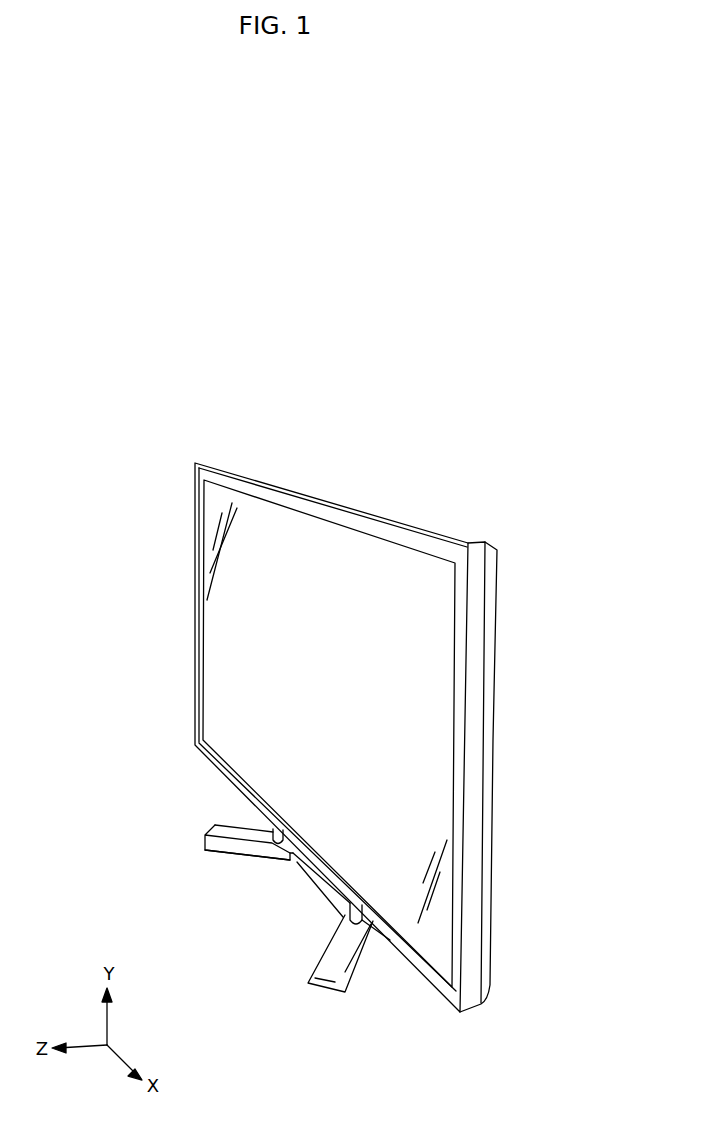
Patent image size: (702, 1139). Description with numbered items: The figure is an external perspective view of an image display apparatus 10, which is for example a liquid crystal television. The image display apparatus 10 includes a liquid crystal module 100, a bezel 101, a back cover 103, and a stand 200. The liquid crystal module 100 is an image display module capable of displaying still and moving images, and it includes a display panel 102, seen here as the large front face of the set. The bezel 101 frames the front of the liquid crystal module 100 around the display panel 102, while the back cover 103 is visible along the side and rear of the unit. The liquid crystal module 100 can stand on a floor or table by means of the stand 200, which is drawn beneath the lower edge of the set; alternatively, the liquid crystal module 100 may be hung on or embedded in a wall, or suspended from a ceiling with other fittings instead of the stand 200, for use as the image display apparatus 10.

The image display apparatus 10 is at (190, 378).
The liquid crystal module 100 is at (358, 485).
The bezel 101 is at (430, 525).
The display panel 102 is at (278, 523).
The back cover 103 is at (492, 592).
The stand 200 is at (205, 850).